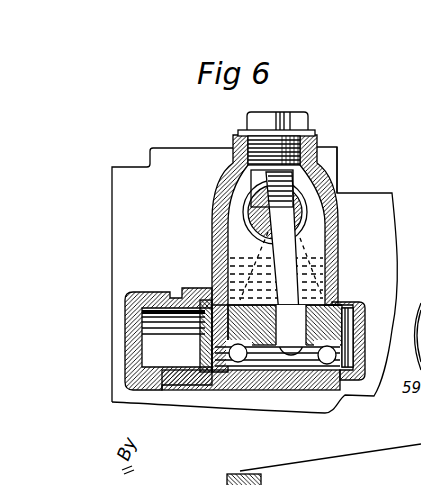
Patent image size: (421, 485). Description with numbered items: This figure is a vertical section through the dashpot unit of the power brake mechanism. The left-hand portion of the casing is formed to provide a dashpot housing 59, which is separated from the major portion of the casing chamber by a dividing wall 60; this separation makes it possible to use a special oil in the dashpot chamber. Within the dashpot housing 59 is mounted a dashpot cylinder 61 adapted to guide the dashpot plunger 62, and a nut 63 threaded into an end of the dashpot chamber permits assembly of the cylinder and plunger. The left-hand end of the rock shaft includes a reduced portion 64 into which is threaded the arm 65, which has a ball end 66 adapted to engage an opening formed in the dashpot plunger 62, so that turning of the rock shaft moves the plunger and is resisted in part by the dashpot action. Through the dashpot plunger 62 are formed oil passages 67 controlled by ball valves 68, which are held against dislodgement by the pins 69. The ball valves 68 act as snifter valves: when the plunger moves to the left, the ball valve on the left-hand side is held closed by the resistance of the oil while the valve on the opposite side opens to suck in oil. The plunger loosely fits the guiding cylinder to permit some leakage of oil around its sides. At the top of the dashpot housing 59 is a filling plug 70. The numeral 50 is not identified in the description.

The ball 50 is at (282, 222).
The dashpot housing 59 is at (212, 246).
The dividing wall 60 is at (227, 207).
The dashpot cylinder 61 is at (345, 302).
The dashpot plunger 62 is at (250, 390).
The nut 63 is at (162, 390).
The reduced portion 64 is at (420, 178).
The arm 65 is at (338, 195).
The ball end 66 is at (288, 390).
The oil passages 67 is at (267, 390).
The ball valves 68 is at (213, 347).
The pins 69 is at (198, 300).
The filling plug 70 is at (290, 130).